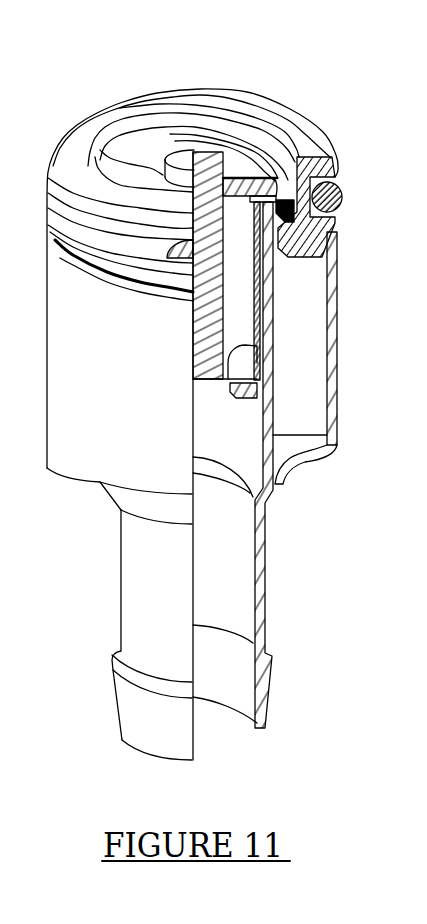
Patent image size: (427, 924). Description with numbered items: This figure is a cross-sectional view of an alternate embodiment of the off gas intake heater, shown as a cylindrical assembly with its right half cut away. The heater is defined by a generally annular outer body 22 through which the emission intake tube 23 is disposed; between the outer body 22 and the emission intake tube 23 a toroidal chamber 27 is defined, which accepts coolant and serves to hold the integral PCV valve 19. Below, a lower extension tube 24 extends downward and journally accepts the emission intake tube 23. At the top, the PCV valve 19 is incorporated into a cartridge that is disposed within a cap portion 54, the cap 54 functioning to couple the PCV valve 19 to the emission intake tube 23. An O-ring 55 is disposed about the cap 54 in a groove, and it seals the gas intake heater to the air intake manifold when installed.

The PCV valve 19 is at (243, 283).
The outer body 22 is at (338, 360).
The emission intake tube 23 is at (330, 447).
The lower extension tube 24 is at (266, 563).
The toroidal chamber 27 is at (307, 405).
The cap portion 54 is at (316, 143).
The O-ring 55 is at (343, 200).